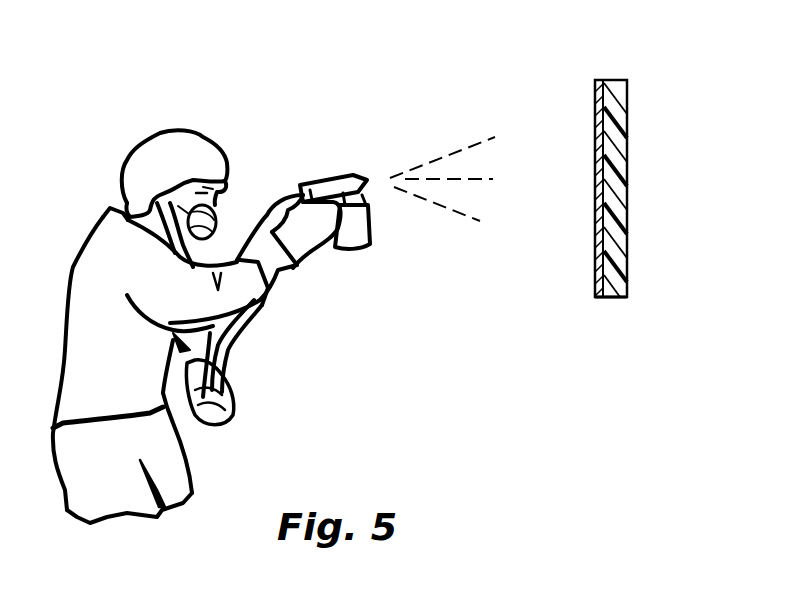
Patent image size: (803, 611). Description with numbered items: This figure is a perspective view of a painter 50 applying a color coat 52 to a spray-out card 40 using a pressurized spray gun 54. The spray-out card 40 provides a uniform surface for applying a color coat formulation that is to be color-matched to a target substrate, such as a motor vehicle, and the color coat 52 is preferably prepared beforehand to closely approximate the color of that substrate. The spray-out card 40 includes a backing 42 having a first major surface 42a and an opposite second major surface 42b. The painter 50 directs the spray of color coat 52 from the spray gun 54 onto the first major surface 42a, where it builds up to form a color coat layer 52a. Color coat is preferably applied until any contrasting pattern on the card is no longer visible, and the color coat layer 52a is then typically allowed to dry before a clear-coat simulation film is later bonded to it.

The painter 50 is at (118, 103).
The pressurized spray gun 54 is at (338, 182).
The color coat 52 is at (452, 150).
The spray-out card 40 is at (655, 92).
The backing 42 is at (614, 82).
The first major surface 42a is at (597, 93).
The second major surface 42b is at (627, 172).
The color coat layer 52a is at (601, 298).